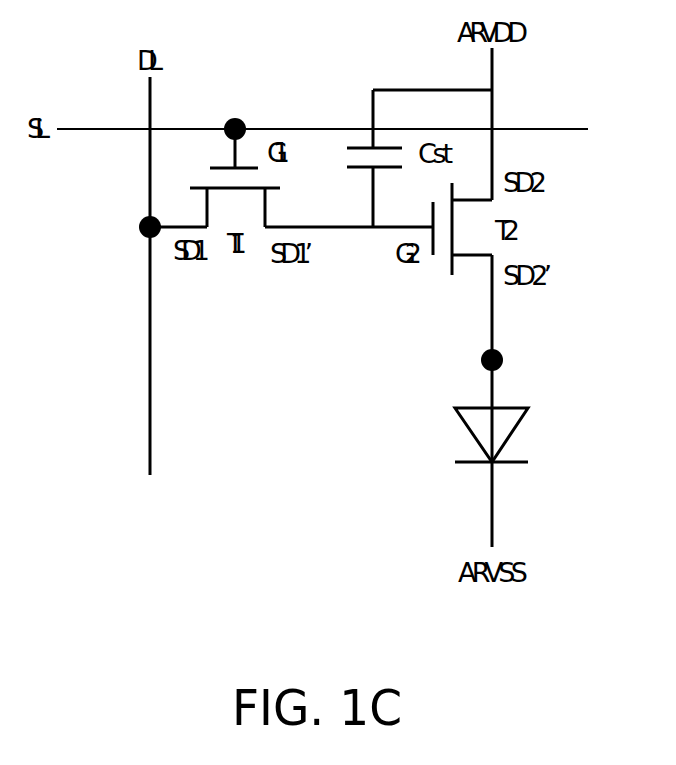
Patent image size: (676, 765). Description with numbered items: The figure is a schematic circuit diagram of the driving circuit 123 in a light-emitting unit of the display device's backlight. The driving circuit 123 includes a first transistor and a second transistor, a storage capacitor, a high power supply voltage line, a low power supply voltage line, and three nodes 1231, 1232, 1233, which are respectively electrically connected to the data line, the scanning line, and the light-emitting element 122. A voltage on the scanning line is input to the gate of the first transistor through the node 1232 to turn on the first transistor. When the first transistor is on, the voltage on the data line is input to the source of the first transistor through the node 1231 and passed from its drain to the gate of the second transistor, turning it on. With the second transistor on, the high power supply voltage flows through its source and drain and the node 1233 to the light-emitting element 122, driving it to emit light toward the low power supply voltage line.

The light-emitting element 122 is at (468, 435).
The driving circuit 123 is at (573, 480).
The node 1231 is at (125, 242).
The node 1232 is at (234, 110).
The node 1233 is at (522, 362).